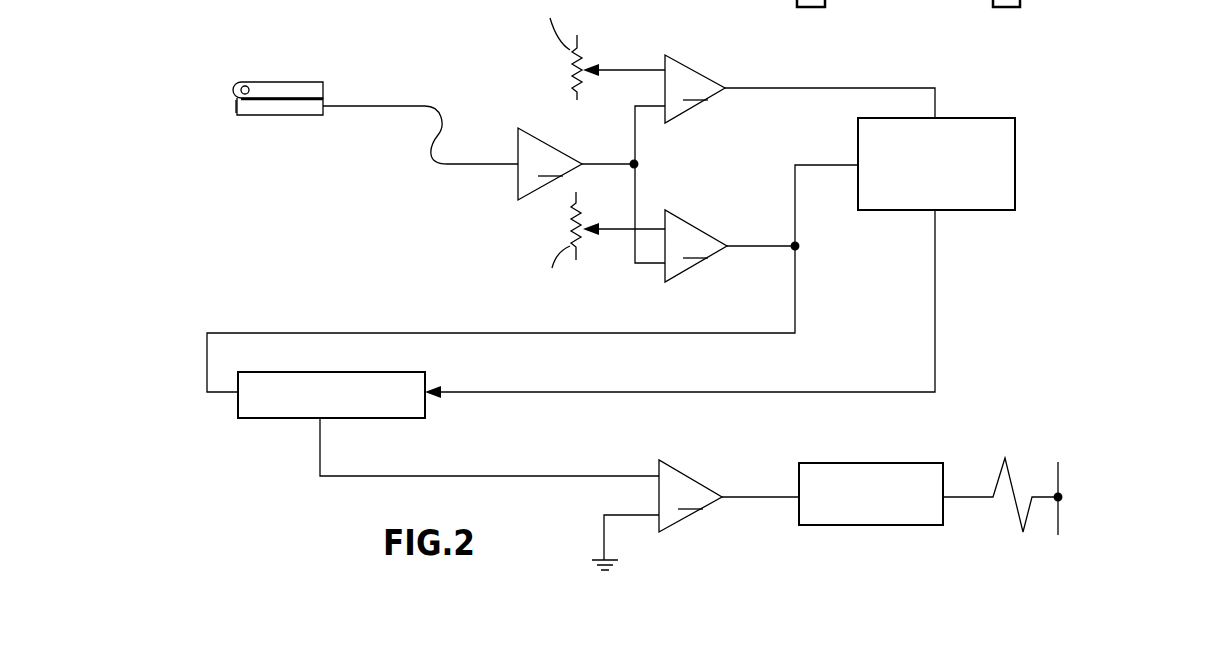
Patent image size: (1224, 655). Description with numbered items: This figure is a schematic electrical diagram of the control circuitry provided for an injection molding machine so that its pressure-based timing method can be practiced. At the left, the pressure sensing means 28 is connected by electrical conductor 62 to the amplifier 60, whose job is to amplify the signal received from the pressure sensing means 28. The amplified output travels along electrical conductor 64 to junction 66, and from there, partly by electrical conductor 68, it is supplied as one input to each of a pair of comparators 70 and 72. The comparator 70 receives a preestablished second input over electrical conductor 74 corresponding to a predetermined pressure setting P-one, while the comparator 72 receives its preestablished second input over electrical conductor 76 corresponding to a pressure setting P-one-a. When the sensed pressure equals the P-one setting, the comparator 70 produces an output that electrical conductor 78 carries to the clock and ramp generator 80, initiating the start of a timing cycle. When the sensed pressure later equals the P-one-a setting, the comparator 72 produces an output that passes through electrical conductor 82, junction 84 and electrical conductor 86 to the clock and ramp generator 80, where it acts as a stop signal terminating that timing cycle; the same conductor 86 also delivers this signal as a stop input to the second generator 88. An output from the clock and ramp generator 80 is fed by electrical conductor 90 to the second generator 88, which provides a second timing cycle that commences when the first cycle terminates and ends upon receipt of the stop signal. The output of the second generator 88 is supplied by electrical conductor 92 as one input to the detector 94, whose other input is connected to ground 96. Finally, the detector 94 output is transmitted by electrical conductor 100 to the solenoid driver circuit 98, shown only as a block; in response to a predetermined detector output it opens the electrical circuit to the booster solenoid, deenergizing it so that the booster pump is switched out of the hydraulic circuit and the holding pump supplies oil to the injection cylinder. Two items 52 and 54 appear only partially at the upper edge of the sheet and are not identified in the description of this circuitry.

The pressure sensing means 28 is at (281, 78).
The indicator 52 is at (782, 0).
The indicator 54 is at (984, 0).
The amplifier 60 is at (550, 164).
The electrical conductor 62 is at (434, 106).
The electrical conductor 64 is at (606, 163).
The junction 66 is at (639, 165).
The electrical conductor 68 is at (639, 197).
The comparator 70 is at (695, 89).
The comparator 72 is at (696, 246).
The electrical conductor 74 is at (636, 70).
The electrical conductor 76 is at (615, 231).
The electrical conductor 78 is at (792, 88).
The clock and ramp generator 80 is at (979, 113).
The electrical conductor 82 is at (755, 248).
The junction 84 is at (800, 246).
The electrical conductor 86 is at (795, 192).
The second generator 88 is at (276, 424).
The electrical conductor 90 is at (802, 392).
The electrical conductor 92 is at (511, 476).
The detector 94 is at (690, 496).
The ground 96 is at (594, 568).
The solenoid driver circuit 98 is at (878, 458).
The electrical conductor 100 is at (745, 497).